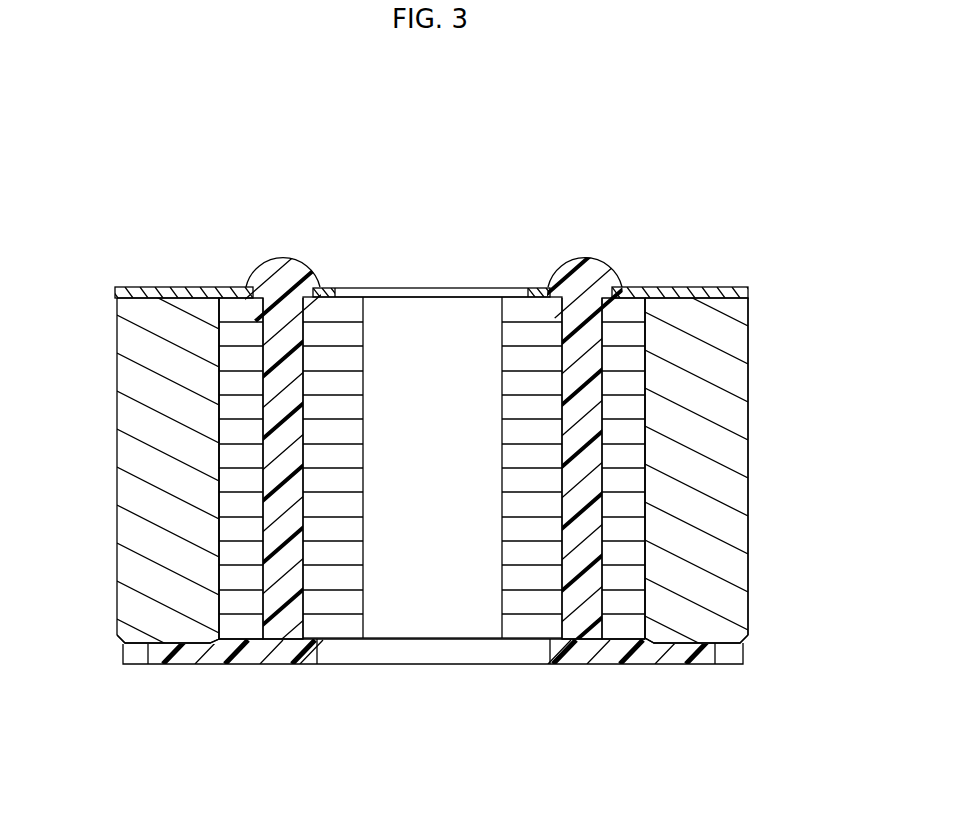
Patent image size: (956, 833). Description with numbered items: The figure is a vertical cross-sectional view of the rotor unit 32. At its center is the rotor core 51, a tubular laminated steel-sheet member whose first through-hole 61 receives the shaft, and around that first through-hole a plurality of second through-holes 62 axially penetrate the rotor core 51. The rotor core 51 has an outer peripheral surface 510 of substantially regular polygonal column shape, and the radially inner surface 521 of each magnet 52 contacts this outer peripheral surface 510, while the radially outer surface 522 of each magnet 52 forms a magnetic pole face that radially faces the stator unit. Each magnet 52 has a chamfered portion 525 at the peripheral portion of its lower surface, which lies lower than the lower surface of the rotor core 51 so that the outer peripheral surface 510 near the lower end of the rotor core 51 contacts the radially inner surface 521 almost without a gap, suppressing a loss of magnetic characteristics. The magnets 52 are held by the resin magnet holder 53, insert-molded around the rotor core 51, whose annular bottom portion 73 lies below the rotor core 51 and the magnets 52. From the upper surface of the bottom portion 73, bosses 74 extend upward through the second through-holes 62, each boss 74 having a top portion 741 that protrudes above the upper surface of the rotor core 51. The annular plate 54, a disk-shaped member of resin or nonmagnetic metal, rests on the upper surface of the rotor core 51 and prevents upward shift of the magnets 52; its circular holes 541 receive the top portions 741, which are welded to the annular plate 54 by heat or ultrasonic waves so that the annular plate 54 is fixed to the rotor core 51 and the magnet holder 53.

The rotor unit 32 is at (252, 172).
The rotor core 51 is at (628, 432).
The outer peripheral surface 510 is at (645, 378).
The magnet 52 is at (180, 486).
The radially inner surface 521 is at (220, 638).
The radially outer surface 522 is at (115, 538).
The chamfered portion 525 is at (217, 642).
The magnet holder 53 is at (177, 680).
The annular plate 54 is at (702, 289).
The circular hole 541 is at (306, 290).
The first through-hole 61 is at (435, 602).
The second through-hole 62 is at (286, 622).
The bottom portion 73 is at (672, 658).
The boss 74 is at (280, 342).
The top portion 741 is at (287, 278).